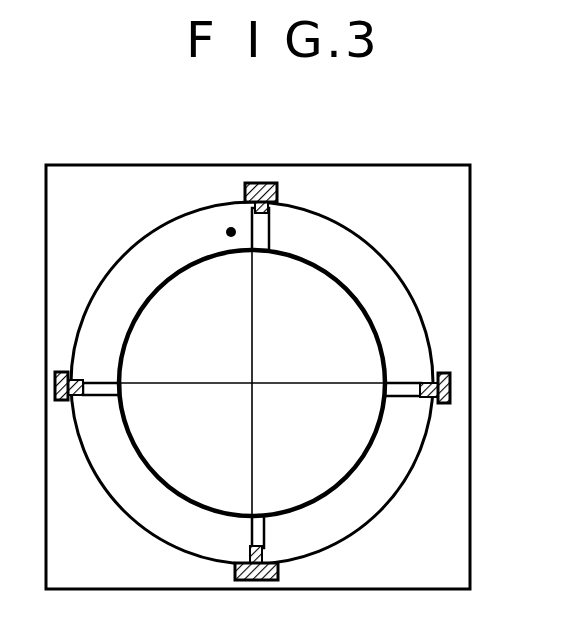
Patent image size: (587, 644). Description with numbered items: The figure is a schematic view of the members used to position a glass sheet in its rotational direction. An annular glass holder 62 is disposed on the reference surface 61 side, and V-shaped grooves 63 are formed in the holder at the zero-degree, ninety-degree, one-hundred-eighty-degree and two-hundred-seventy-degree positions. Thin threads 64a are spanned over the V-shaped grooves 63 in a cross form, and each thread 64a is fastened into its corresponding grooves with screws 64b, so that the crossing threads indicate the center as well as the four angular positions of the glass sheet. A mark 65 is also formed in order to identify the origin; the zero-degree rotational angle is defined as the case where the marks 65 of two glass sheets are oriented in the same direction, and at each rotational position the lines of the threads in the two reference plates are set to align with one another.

The reference surface 61 is at (457, 203).
The annular glass holder 62 is at (415, 340).
The V-shaped grooves 63 is at (407, 396).
The thin threads 64a is at (307, 383).
The screws 64b is at (262, 183).
The mark 65 is at (231, 231).